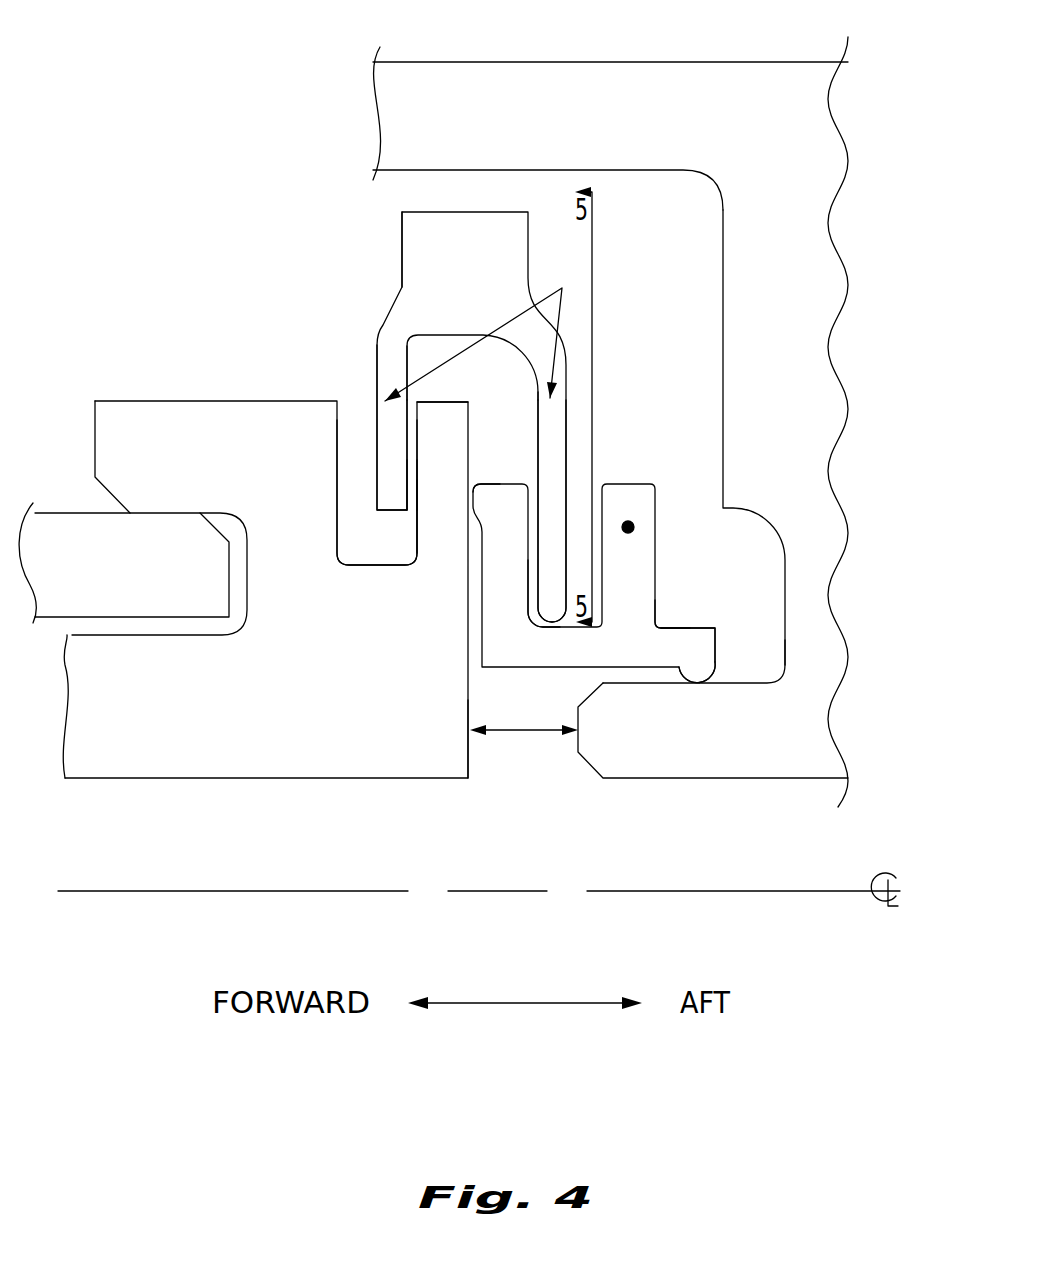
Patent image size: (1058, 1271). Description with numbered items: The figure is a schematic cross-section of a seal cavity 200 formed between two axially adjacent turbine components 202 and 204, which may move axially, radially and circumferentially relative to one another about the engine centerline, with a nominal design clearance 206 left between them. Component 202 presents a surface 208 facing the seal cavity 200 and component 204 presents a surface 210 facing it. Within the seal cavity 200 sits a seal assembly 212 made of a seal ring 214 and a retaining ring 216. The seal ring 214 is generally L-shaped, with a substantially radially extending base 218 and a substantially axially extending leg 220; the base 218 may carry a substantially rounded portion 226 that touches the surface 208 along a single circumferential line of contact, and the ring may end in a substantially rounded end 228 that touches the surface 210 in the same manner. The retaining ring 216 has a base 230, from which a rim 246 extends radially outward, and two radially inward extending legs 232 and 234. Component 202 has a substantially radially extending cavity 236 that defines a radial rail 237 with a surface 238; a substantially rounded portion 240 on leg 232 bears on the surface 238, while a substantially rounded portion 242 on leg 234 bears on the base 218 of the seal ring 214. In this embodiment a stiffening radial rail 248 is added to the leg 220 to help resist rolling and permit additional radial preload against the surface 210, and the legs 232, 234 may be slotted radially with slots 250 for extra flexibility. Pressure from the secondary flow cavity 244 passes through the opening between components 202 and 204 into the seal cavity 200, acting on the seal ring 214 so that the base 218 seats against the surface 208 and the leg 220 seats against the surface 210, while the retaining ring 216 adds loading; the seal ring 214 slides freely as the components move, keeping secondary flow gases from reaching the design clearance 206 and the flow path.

The seal cavity 200 is at (160, 126).
The turbine component 202 is at (193, 780).
The turbine component 204 is at (762, 780).
The design clearance 206 is at (525, 734).
The surface 208 is at (470, 763).
The surface 210 is at (753, 683).
The seal assembly 212 is at (676, 406).
The seal ring 214 is at (671, 615).
The retaining ring 216 is at (385, 301).
The base 218 is at (481, 628).
The leg 220 is at (690, 630).
The substantially rounded portion 226 is at (472, 497).
The substantially rounded end 228 is at (698, 683).
The base 230 is at (452, 345).
The leg 232 is at (377, 375).
The leg 234 is at (574, 405).
The cavity 236 is at (354, 410).
The radial rail 237 is at (450, 403).
The surface 238 is at (417, 532).
The substantially rounded portion 240 is at (409, 471).
The substantially rounded portion 242 is at (528, 607).
The secondary flow cavity 244 is at (272, 42).
The rim 246 is at (394, 290).
The stiffening radial rail 248 is at (630, 526).
The slots 250 is at (562, 288).